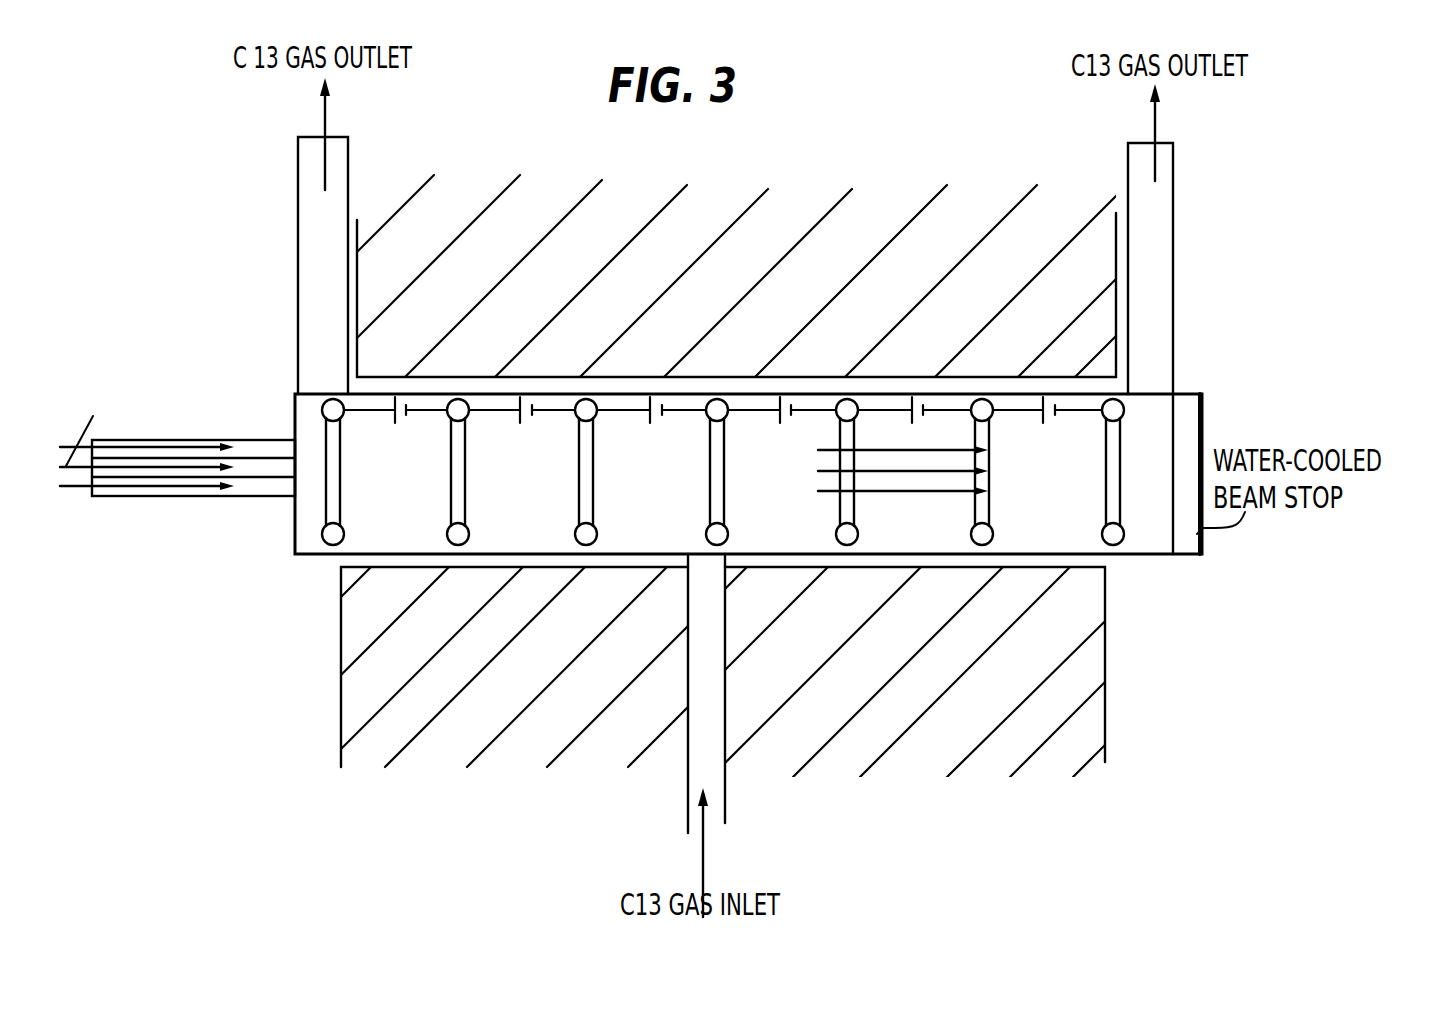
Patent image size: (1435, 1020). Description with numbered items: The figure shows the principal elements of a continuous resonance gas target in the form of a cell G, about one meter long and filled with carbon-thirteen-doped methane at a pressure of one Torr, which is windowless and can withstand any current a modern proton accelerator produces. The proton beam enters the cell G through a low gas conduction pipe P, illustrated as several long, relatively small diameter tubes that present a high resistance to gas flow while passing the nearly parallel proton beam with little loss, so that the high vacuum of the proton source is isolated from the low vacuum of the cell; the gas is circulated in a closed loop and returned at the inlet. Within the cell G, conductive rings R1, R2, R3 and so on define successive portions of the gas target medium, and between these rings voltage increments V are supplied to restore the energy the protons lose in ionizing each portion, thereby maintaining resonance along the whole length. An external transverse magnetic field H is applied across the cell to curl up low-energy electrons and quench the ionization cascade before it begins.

The low gas conduction pipe P is at (266, 440).
The external transverse magnetic field H is at (605, 336).
The voltage boosts V is at (723, 428).
The gas cell G is at (748, 474).
The conductive ring R1 is at (344, 449).
The conductive ring R2 is at (470, 450).
The conductive ring R3 is at (590, 474).